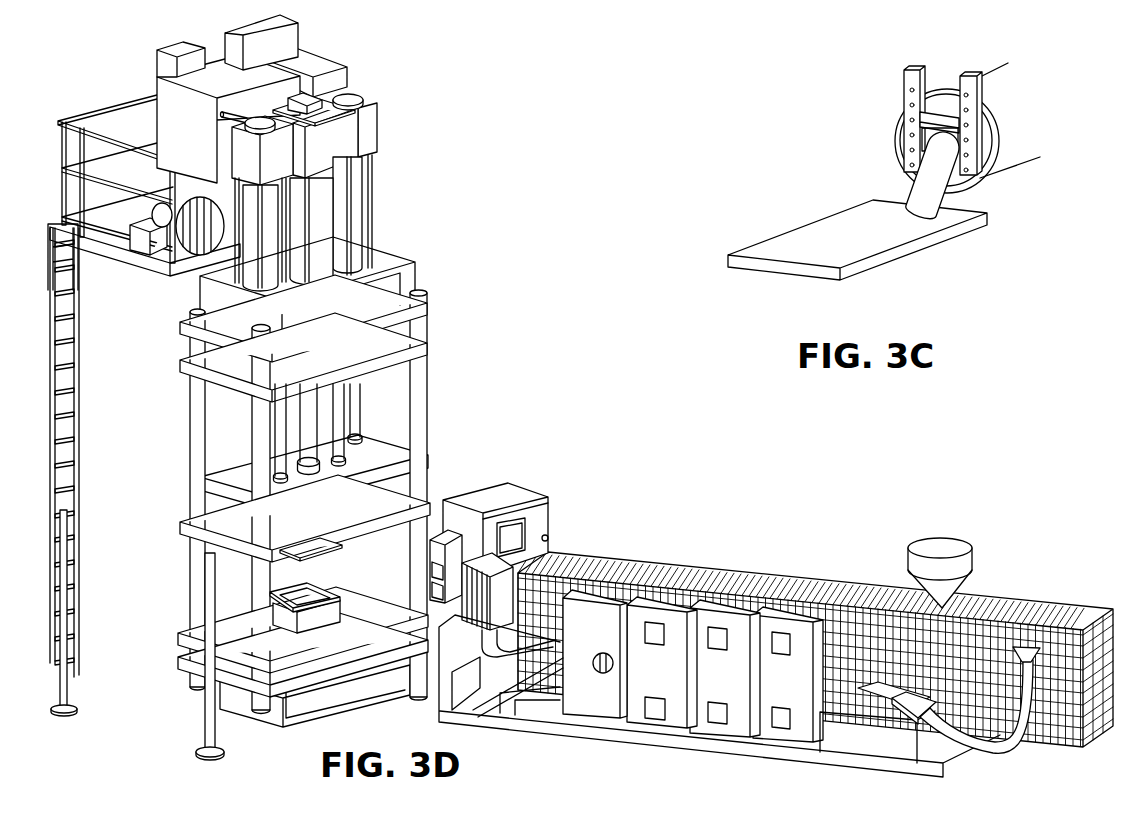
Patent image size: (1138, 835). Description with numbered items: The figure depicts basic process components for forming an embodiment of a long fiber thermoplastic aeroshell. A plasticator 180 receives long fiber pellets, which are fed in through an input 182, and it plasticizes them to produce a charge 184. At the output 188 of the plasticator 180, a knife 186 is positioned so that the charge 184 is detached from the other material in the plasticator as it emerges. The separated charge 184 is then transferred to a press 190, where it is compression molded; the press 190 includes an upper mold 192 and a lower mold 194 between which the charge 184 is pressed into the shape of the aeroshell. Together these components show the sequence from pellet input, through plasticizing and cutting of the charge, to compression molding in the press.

In FIG. 3C, the plasticator 180 is at (877, 72).
In FIG. 3D, the plasticator 180 is at (889, 512).
In FIG. 3D, the input 182 is at (974, 536).
In FIG. 3C, the charge 184 is at (912, 191).
In FIG. 3C, the knife 186 is at (933, 137).
In FIG. 3C, the output 188 is at (989, 186).
In FIG. 3D, the output 188 is at (587, 533).
In FIG. 3D, the press 190 is at (471, 384).
In FIG. 3D, the upper mold 192 is at (321, 558).
In FIG. 3D, the lower mold 194 is at (307, 590).